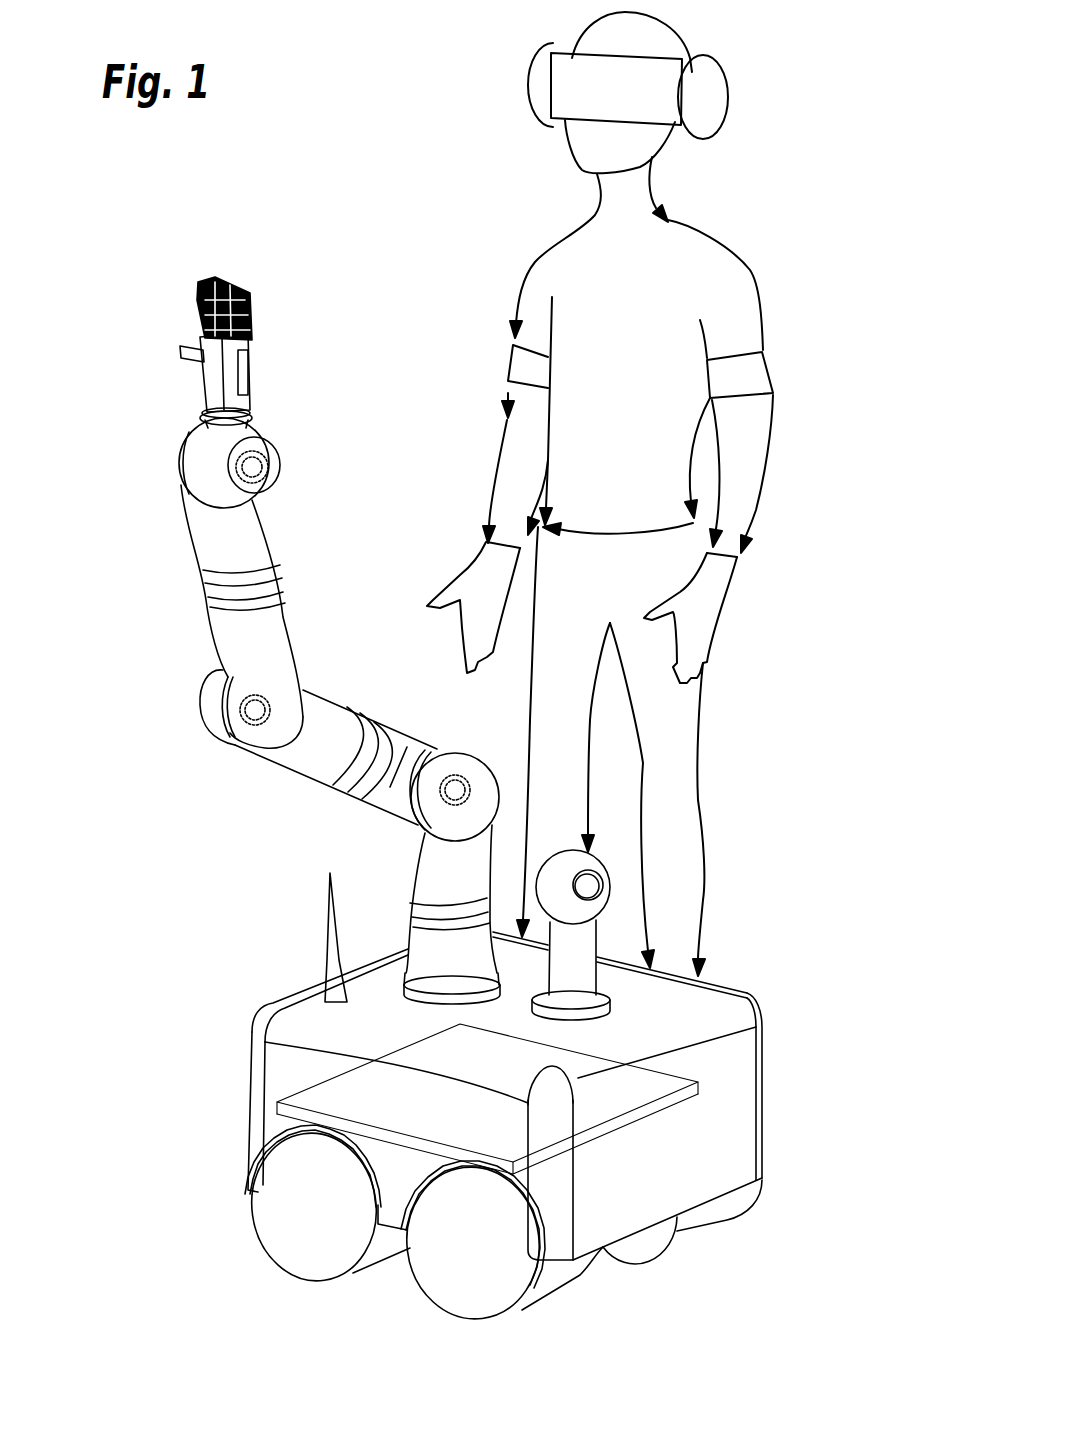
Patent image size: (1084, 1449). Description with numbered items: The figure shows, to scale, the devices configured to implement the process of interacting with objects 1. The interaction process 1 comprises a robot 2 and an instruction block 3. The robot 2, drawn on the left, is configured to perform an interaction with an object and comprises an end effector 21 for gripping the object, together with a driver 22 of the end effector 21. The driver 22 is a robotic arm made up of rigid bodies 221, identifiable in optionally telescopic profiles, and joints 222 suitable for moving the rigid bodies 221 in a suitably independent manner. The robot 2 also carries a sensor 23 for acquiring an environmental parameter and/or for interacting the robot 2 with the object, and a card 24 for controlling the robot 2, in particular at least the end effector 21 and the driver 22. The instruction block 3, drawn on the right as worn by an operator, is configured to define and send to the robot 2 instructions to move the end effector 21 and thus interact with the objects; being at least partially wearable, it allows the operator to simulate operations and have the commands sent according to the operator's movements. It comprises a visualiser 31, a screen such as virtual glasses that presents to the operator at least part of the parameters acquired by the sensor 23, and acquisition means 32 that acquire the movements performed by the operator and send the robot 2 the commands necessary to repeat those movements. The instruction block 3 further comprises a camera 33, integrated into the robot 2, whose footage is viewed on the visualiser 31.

The process of interacting with objects 1 is at (868, 1284).
The robot 2 is at (176, 1258).
The instruction block 3 is at (416, 40).
The end effector 21 is at (177, 255).
The driver 22 is at (166, 925).
The rigid bodies 221 is at (162, 610).
The joints 222 is at (171, 498).
The sensor 23 is at (262, 468).
The card 24 is at (597, 1123).
The visualiser 31 is at (755, 134).
The acquisition means 32 is at (508, 367).
The camera 33 is at (620, 914).